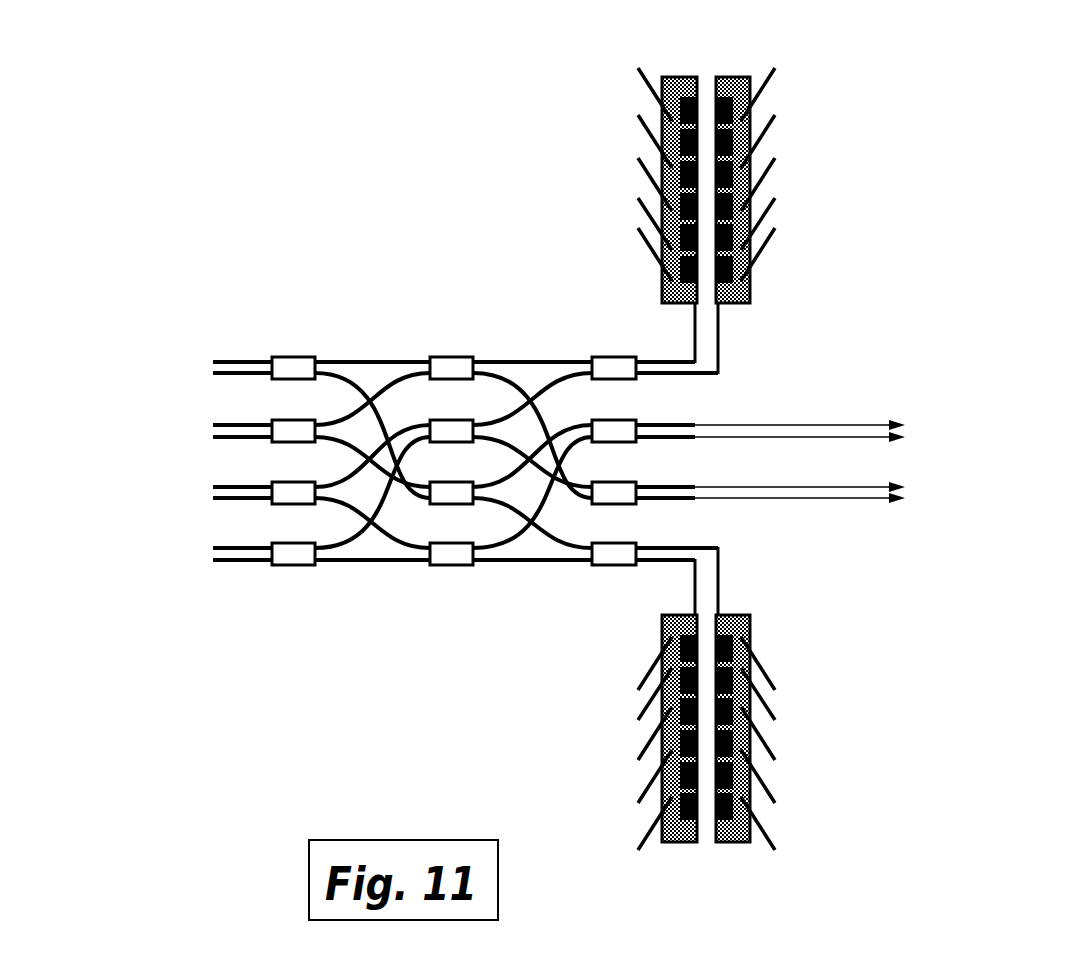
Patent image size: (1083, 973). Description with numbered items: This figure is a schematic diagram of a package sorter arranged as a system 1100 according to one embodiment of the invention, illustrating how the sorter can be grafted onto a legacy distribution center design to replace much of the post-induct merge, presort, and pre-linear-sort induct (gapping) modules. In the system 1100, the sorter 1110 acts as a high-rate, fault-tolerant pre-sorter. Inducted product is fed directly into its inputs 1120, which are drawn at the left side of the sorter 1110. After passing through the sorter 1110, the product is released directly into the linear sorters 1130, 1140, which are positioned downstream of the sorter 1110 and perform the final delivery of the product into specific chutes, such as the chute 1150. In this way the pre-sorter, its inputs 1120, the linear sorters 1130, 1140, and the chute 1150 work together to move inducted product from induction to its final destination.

The system 1100 is at (422, 128).
The sorter 1110 is at (643, 317).
The inputs 1120 is at (135, 582).
The linear sorter 1130 is at (657, 207).
The linear sorter 1140 is at (670, 785).
The chute 1150 is at (650, 82).